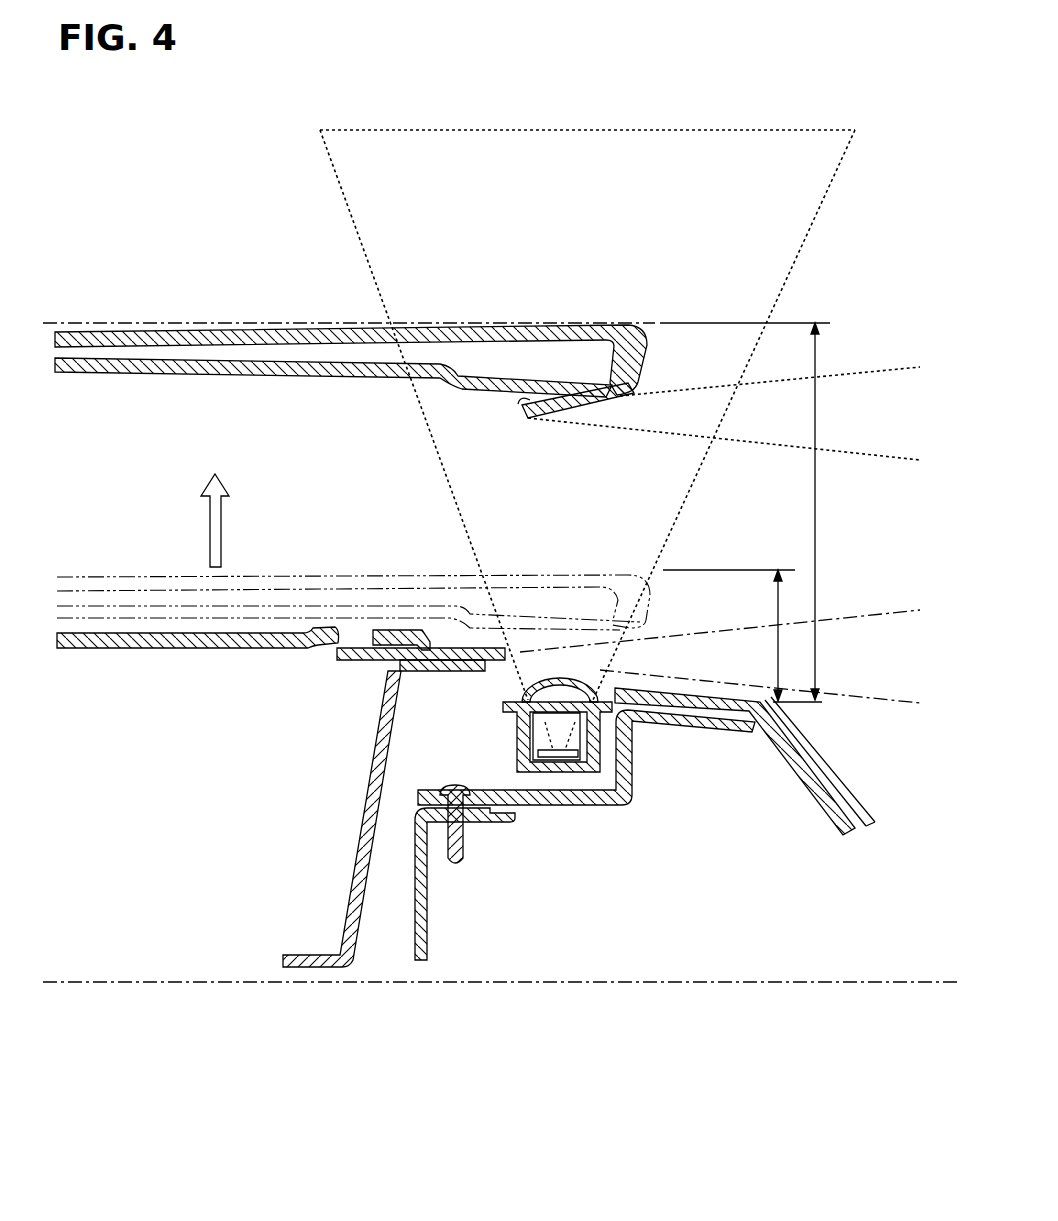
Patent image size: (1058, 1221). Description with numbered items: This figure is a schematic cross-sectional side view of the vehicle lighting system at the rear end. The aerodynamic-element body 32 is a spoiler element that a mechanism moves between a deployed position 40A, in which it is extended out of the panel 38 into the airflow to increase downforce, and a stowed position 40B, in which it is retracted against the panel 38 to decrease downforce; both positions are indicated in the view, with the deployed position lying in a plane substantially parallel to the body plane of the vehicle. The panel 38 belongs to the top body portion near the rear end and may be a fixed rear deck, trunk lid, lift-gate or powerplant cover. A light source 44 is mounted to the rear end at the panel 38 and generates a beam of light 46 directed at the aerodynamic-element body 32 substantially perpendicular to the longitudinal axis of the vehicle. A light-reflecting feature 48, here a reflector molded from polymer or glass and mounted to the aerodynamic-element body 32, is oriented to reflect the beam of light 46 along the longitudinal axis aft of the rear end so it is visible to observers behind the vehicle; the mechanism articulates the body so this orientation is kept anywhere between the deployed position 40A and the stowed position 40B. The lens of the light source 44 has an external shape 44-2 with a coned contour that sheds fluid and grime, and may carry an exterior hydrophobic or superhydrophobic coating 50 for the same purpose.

The aerodynamic-element body 32 is at (328, 336).
The panel 38 is at (676, 688).
The deployed position 40A is at (814, 511).
The stowed position 40B is at (742, 636).
The light source 44 is at (555, 762).
The external shape 44-2 is at (527, 690).
The beam of light 46 is at (872, 374).
The light-reflecting feature 48 is at (528, 400).
The hydrophobic coating 50 is at (560, 678).